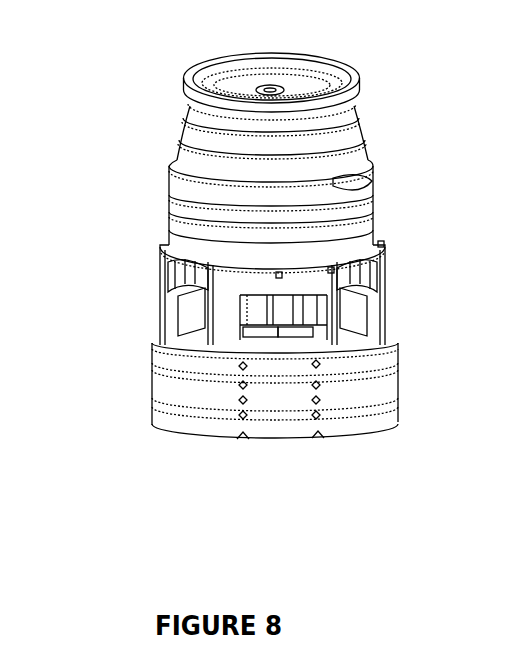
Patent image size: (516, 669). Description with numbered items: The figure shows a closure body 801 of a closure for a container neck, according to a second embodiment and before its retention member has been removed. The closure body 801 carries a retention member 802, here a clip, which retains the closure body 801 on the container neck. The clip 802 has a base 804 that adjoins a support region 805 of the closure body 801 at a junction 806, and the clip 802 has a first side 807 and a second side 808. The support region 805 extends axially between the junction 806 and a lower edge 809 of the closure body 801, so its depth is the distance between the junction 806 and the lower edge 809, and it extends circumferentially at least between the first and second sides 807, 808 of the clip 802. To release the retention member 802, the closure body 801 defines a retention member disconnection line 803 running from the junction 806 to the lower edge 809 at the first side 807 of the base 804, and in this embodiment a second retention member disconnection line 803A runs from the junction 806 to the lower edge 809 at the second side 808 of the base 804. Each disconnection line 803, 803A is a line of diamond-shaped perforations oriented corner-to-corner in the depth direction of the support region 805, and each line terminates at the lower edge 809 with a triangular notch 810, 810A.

The closure body 801 is at (160, 83).
The retention member 802 is at (275, 327).
The retention member disconnection line 803 is at (240, 362).
The second retention member disconnection line 803A is at (320, 363).
The base 804 is at (300, 352).
The support region 805 is at (280, 392).
The junction 806 is at (250, 352).
The first side 807 is at (238, 336).
The second side 808 is at (318, 330).
The lower edge 809 is at (275, 442).
The notch 810 is at (245, 440).
The notch 810A is at (318, 438).